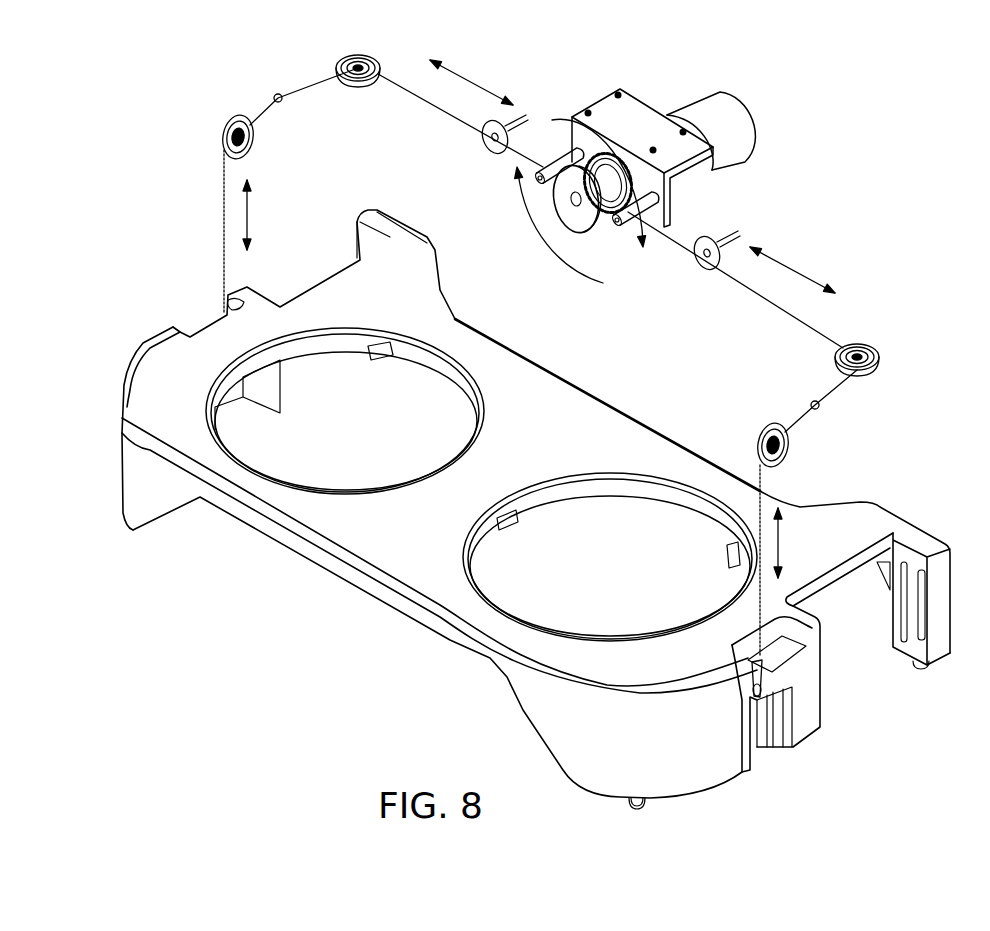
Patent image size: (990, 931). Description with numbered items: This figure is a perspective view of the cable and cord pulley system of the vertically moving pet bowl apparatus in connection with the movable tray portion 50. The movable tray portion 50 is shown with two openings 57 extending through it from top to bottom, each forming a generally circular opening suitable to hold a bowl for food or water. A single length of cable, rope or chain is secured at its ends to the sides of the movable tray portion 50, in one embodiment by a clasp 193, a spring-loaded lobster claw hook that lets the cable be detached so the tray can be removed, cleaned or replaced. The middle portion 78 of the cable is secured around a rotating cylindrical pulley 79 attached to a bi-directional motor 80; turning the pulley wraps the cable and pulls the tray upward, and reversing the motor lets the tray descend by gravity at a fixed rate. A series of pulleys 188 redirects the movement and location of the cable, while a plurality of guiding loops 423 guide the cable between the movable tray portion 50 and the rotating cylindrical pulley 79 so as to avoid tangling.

The movable tray portion 50 is at (400, 563).
The opening 57 is at (570, 497).
The middle portion 78 is at (573, 228).
The rotating cylindrical pulley 79 is at (618, 187).
The bi-directional motor 80 is at (752, 133).
The pulleys 188 is at (882, 358).
The clasp 193 is at (797, 670).
The guiding loops 423 is at (275, 95).